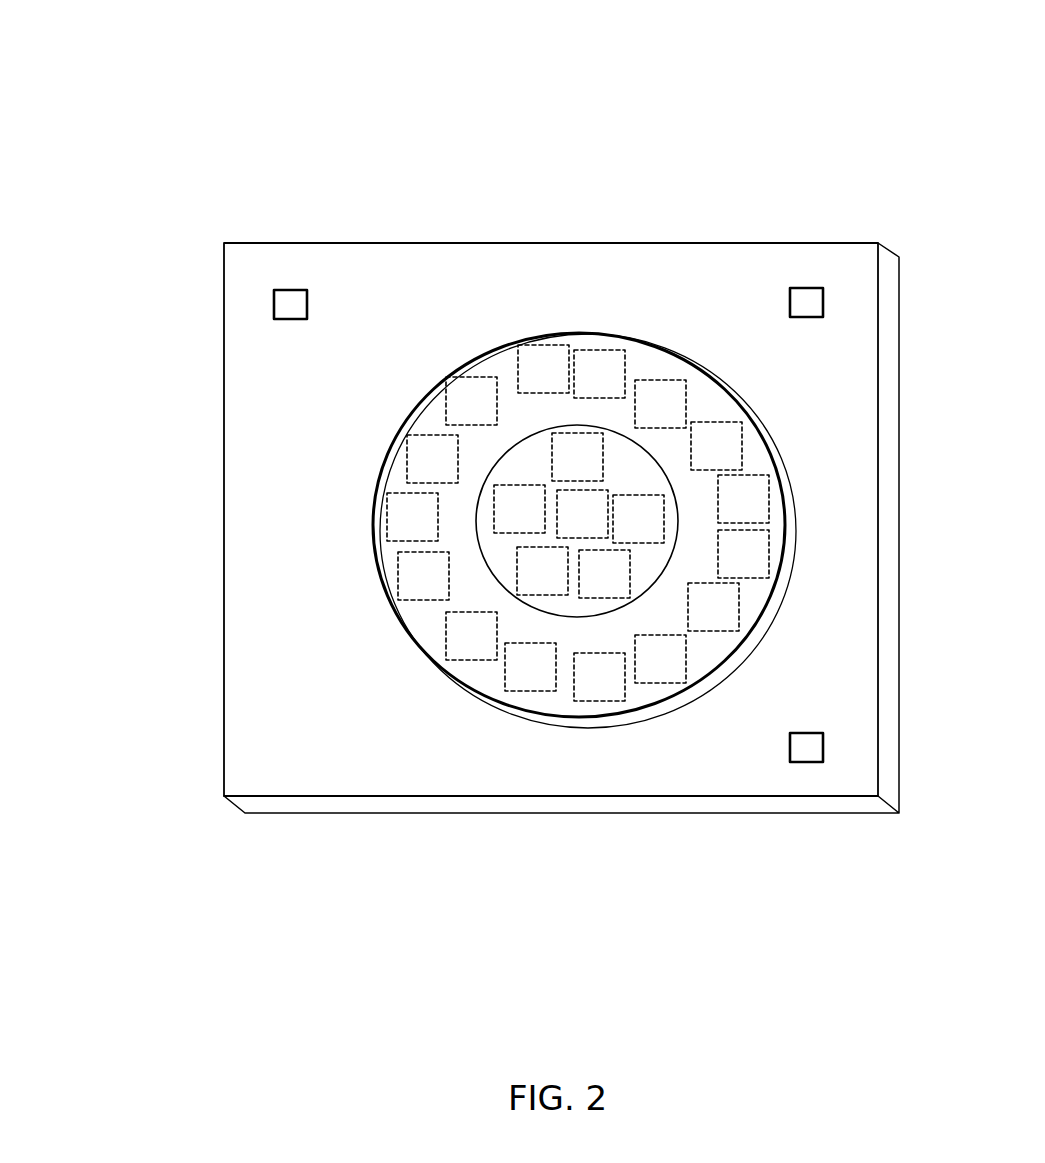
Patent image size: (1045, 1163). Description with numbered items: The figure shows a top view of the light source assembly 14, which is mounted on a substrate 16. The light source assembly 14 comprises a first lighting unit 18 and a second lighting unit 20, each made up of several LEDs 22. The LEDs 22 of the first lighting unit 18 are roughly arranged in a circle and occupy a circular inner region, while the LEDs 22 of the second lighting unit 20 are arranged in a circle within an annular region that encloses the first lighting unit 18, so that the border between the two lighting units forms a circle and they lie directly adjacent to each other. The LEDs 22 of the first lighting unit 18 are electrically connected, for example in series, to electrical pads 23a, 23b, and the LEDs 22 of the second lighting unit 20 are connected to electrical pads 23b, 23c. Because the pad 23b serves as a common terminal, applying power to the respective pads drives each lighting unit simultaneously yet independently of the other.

The light source assembly 14 is at (390, 191).
The substrate 16 is at (317, 735).
The first lighting unit 18 is at (525, 470).
The second lighting unit 20 is at (562, 693).
The LEDs 22 is at (545, 582).
The electrical pad 23a is at (287, 302).
The electrical pad 23b is at (807, 745).
The electrical pad 23c is at (808, 298).